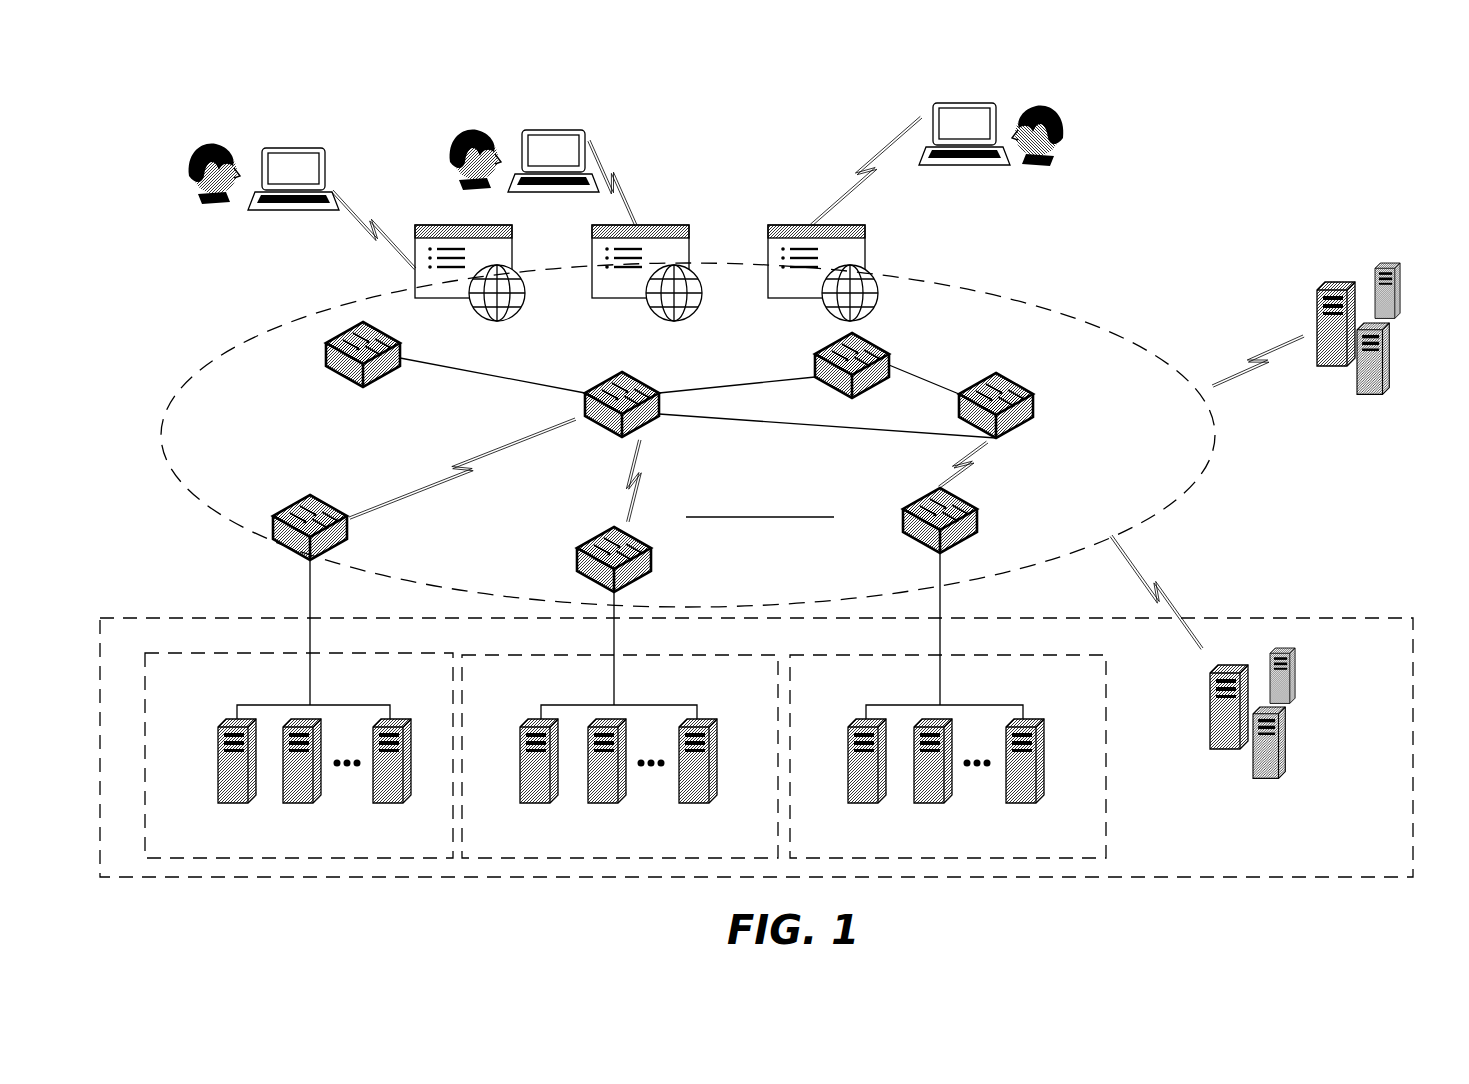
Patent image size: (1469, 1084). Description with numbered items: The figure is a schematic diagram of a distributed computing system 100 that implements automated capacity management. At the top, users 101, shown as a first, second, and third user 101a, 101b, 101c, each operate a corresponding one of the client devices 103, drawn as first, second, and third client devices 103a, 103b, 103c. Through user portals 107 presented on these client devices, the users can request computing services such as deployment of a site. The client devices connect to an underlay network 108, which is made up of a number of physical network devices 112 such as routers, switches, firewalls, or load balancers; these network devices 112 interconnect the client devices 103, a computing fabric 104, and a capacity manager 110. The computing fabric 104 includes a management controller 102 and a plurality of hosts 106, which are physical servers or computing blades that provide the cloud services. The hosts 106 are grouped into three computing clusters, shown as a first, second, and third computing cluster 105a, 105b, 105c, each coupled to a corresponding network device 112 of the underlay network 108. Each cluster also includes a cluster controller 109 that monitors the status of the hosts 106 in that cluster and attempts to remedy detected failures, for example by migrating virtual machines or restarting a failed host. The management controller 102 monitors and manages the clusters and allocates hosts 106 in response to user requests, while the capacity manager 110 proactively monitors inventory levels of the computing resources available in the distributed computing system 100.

The distributed computing system 100 is at (1345, 170).
The users 101 is at (1124, 103).
The first user 101a is at (220, 145).
The second user 101b is at (468, 128).
The third user 101c is at (1050, 108).
The management controller 102 is at (1231, 834).
The client devices 103 is at (654, 129).
The first client device 103a is at (305, 148).
The second client device 103b is at (565, 132).
The third client device 103c is at (965, 103).
The computing fabric 104 is at (1132, 315).
The first computing cluster 105a is at (171, 668).
The second computing cluster 105b is at (545, 668).
The third computing cluster 105c is at (878, 668).
The hosts 106 is at (222, 724).
The user portals 107 is at (655, 226).
The underlay network 108 is at (746, 541).
The cluster controller 109 is at (390, 724).
The capacity manager 110 is at (1338, 451).
The network devices 112 is at (345, 330).